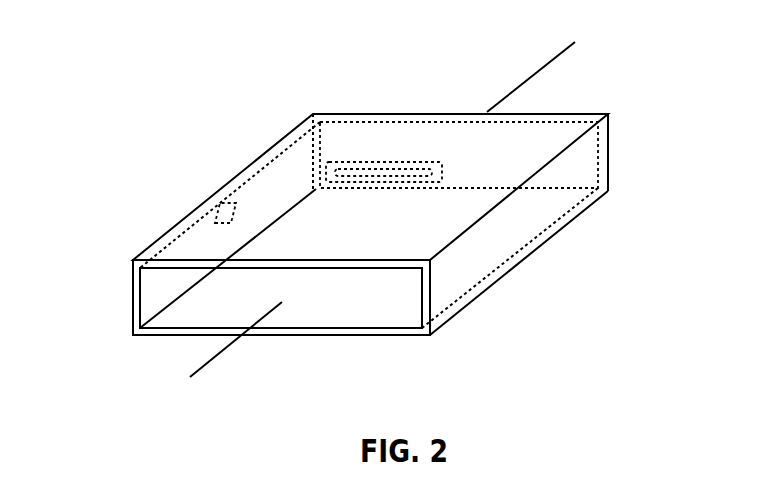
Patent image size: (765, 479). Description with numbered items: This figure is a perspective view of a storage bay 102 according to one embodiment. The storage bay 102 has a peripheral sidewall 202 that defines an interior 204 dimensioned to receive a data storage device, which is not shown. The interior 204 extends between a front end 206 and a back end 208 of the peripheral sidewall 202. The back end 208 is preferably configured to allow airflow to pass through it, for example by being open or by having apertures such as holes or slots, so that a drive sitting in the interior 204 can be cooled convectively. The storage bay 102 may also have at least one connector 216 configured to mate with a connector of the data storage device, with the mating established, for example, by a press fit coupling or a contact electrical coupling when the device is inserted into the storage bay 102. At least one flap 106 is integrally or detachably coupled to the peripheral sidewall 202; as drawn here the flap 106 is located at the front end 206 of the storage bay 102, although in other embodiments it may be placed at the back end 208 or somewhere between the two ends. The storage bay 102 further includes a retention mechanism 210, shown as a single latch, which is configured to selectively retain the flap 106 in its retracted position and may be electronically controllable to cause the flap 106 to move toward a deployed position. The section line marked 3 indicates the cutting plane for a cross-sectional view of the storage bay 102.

The storage bay 102 is at (106, 82).
The peripheral sidewall 202 is at (517, 229).
The interior 204 is at (306, 216).
The front end 206 is at (350, 348).
The flap 106 is at (420, 306).
The back end 208 is at (349, 100).
The connector 216 is at (391, 150).
The retention mechanism 210 is at (198, 220).
The section line 3 is at (557, 70).